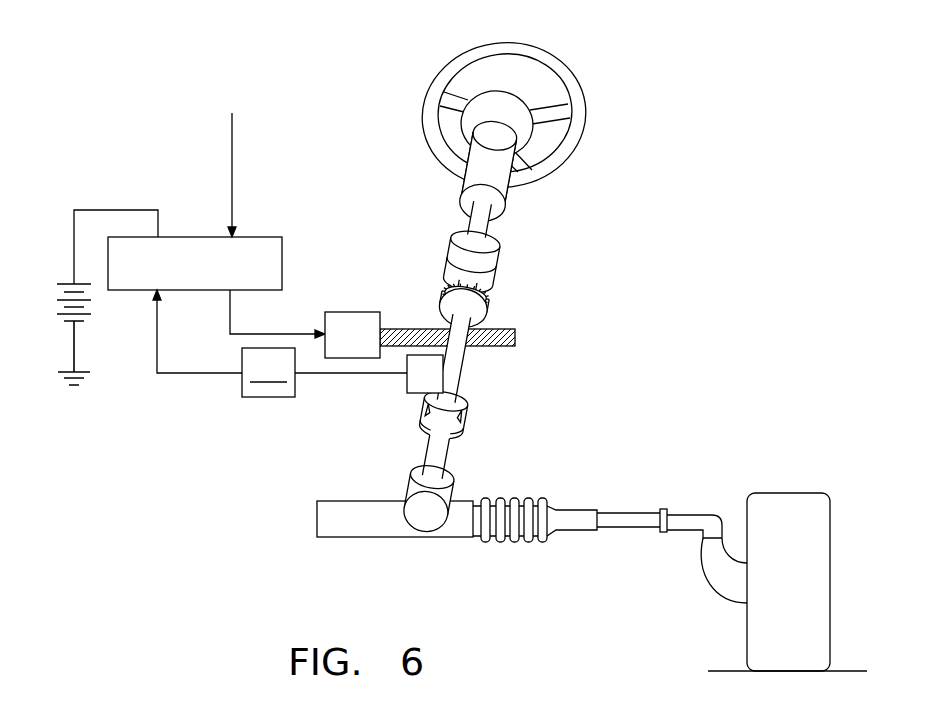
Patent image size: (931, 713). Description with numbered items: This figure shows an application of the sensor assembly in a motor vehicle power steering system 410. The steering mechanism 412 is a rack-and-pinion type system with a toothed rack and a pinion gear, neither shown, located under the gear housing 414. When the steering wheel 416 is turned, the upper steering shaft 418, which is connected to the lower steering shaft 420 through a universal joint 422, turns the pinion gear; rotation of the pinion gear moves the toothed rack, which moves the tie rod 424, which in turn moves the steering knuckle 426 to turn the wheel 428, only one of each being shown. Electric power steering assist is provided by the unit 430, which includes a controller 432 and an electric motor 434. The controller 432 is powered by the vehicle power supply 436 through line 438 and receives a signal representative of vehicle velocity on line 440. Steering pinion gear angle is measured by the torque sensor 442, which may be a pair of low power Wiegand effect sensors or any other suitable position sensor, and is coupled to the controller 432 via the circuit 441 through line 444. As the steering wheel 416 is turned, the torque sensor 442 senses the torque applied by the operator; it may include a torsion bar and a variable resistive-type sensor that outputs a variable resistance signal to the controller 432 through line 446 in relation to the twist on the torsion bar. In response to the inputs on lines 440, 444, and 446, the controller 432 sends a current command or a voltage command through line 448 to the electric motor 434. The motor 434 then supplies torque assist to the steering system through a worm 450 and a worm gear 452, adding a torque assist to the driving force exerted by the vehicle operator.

The motor vehicle power steering system 410 is at (662, 235).
The steering mechanism 412 is at (505, 546).
The gear housing 414 is at (459, 484).
The steering wheel 416 is at (554, 68).
The upper steering shaft 418 is at (516, 142).
The lower steering shaft 420 is at (458, 440).
The universal joint 422 is at (468, 410).
The tie rod 424 is at (636, 528).
The steering knuckle 426 is at (718, 578).
The wheel 428 is at (776, 501).
The electric power steering assist unit 430 is at (309, 112).
The controller 432 is at (257, 236).
The electric motor 434 is at (350, 312).
The vehicle power supply 436 is at (61, 297).
The line 438 is at (132, 209).
The line 440 is at (230, 176).
The circuit 441 is at (268, 372).
The torque sensor 442 is at (422, 395).
The line 444 is at (196, 374).
The line 446 is at (282, 250).
The line 448 is at (300, 333).
The worm 450 is at (512, 330).
The worm gear 452 is at (492, 290).